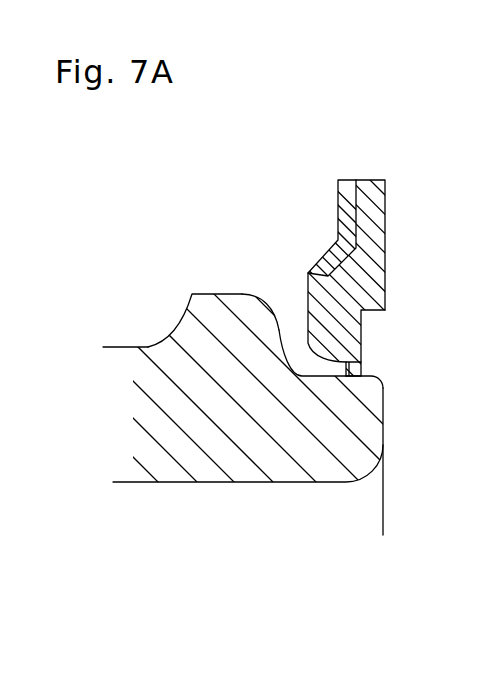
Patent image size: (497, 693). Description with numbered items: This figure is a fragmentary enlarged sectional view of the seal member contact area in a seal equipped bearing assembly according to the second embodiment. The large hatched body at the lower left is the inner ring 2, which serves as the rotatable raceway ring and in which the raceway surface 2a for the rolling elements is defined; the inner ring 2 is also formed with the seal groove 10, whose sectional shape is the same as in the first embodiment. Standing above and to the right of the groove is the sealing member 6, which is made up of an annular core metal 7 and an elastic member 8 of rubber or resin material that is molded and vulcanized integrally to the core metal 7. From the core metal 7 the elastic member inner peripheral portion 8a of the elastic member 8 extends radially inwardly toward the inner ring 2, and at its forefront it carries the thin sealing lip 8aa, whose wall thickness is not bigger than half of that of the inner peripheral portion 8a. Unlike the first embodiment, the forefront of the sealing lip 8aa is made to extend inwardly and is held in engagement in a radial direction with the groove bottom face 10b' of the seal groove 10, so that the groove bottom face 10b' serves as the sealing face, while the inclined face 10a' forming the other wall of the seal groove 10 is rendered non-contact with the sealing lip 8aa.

The inner ring 2 is at (215, 483).
The raceway surface 2a is at (162, 338).
The sealing member 6 is at (381, 330).
The core metal 7 is at (338, 208).
The elastic member 8 is at (363, 256).
The elastic member inner peripheral portion 8a is at (362, 320).
The sealing lip 8aa is at (340, 376).
The seal groove 10 is at (301, 372).
The inclined face 10a' is at (215, 266).
The groove bottom face 10b' is at (410, 417).